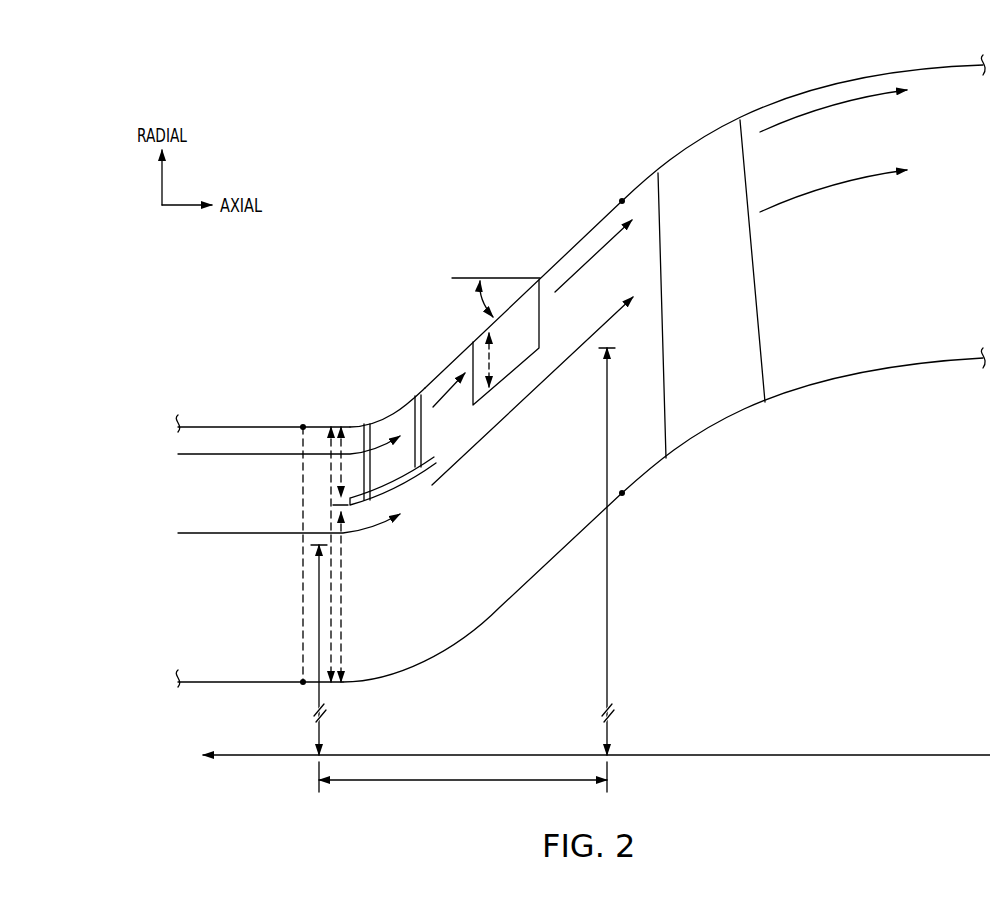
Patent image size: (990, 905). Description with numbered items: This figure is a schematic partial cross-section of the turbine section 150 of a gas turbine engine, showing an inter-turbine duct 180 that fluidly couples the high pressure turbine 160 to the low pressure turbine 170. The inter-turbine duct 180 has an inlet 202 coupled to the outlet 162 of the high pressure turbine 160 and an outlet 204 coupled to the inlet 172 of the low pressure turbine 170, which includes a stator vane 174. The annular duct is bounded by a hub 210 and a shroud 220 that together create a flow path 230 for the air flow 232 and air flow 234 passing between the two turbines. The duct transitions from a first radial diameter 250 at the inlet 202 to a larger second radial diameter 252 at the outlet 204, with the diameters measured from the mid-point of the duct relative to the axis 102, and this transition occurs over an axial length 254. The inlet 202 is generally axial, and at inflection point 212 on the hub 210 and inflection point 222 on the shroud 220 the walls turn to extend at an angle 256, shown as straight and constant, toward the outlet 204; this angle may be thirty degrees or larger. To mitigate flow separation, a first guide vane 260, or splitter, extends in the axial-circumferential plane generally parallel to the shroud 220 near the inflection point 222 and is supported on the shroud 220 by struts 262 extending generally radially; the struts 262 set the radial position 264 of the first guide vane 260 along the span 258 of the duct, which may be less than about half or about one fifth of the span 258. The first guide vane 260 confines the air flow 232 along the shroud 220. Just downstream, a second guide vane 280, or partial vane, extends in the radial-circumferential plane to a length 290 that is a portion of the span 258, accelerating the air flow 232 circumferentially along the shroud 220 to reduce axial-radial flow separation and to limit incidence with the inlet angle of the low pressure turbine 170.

The axis 102 is at (858, 751).
The turbine section 150 is at (389, 171).
The high pressure turbine 160 is at (277, 459).
The outlet 162 is at (284, 427).
The low pressure turbine 170 is at (798, 255).
The inlet 172 is at (637, 198).
The stator vane 174 is at (753, 312).
The inter-turbine duct 180 is at (398, 329).
The inlet 202 is at (316, 427).
The outlet 204 is at (608, 220).
The hub 210 is at (490, 620).
The inflection point 212 is at (430, 661).
The shroud 220 is at (423, 390).
The inflection point 222 is at (387, 420).
The flow path 230 is at (430, 596).
The air flow 232 is at (213, 457).
The air flow 234 is at (212, 536).
The first radial diameter 250 is at (320, 731).
The second radial diameter 252 is at (608, 731).
The axial length 254 is at (463, 783).
The angle 256 is at (480, 303).
The span 258 is at (336, 503).
The first guide vane 260 is at (501, 464).
The struts 262 is at (423, 431).
The radial position 264 is at (340, 468).
The second guide vane 280 is at (532, 391).
The length 290 is at (492, 357).